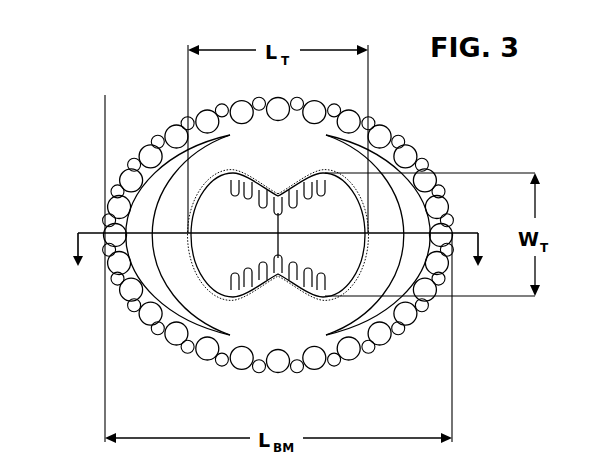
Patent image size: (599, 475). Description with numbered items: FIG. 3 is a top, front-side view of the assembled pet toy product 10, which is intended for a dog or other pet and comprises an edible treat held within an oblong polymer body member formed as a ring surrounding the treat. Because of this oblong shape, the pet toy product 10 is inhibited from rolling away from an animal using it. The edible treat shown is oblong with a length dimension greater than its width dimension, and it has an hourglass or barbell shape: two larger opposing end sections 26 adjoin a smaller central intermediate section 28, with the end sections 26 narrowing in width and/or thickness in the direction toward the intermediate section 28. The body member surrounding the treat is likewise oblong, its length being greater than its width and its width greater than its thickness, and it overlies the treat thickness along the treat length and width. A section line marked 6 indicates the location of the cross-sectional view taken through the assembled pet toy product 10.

The pet toy product 10 is at (144, 78).
The opposing end sections 26 is at (215, 240).
The intermediate section 28 is at (273, 246).
The section line 6- 6 is at (277, 264).